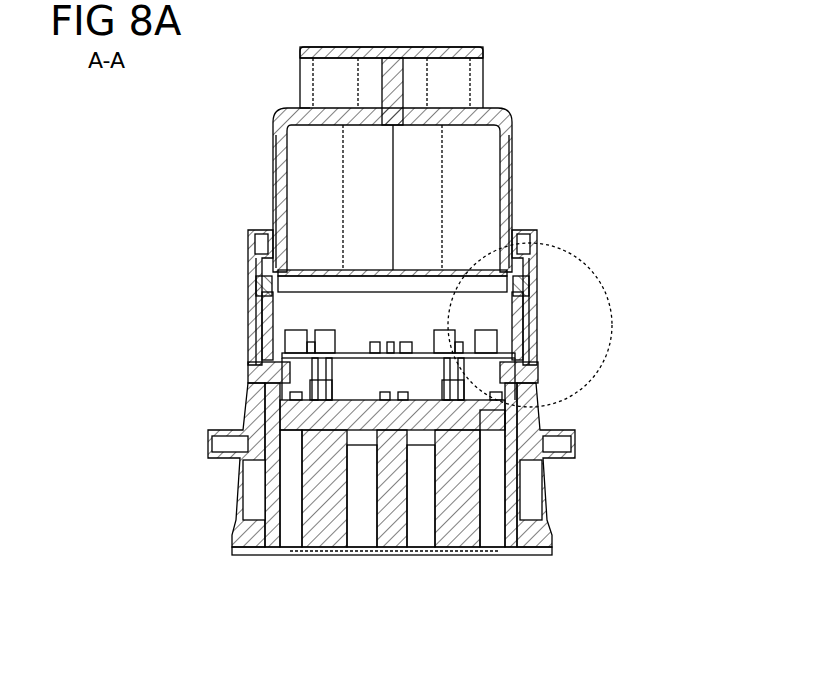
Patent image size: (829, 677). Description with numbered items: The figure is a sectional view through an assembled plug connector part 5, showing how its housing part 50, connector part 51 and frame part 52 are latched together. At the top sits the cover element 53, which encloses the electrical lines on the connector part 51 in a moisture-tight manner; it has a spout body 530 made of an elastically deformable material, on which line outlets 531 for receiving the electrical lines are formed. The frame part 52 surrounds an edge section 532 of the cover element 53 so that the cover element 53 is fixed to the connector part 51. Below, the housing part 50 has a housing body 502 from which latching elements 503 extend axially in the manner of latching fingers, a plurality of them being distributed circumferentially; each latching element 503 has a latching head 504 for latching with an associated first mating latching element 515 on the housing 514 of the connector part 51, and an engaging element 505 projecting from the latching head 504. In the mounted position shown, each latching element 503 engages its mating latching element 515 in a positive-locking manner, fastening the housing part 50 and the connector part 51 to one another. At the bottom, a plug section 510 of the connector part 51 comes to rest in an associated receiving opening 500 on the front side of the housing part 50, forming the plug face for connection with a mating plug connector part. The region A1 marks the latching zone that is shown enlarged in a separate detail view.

The plug connector part 5 is at (562, 155).
The line outlet 531 is at (430, 48).
The cover element 53 is at (515, 133).
The spout body 530 is at (273, 168).
The engaging element 505 is at (535, 285).
The latching head 504 is at (537, 297).
The first mating latching element 515 is at (538, 312).
The frame part 52 is at (547, 268).
The edge section 532 is at (532, 262).
The latching element 503 is at (538, 343).
The housing 514 is at (252, 365).
The housing part 50 is at (563, 553).
The housing body 502 is at (515, 484).
The connector part 51 is at (322, 553).
The plug section 510 is at (463, 548).
The receiving opening 500 is at (494, 545).
The detail region A1 is at (582, 392).